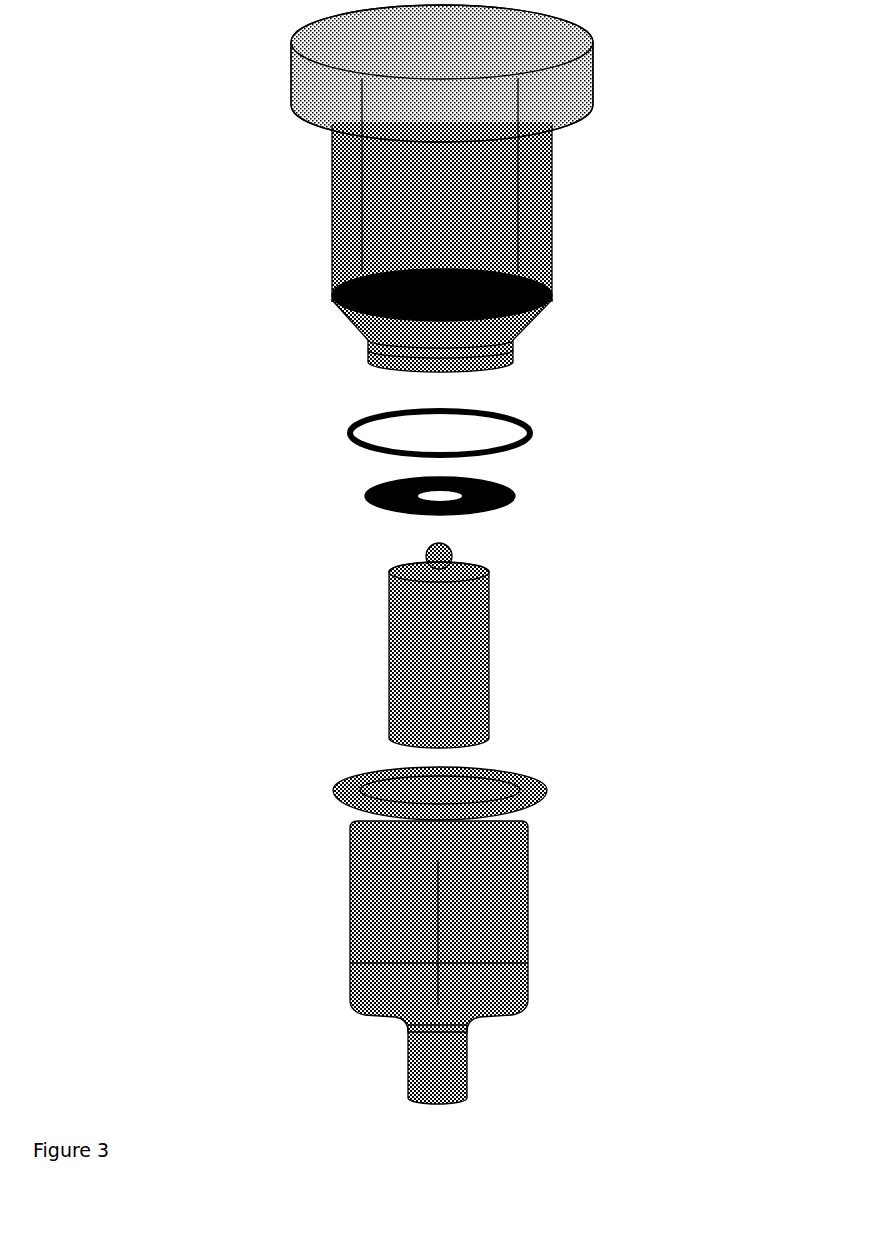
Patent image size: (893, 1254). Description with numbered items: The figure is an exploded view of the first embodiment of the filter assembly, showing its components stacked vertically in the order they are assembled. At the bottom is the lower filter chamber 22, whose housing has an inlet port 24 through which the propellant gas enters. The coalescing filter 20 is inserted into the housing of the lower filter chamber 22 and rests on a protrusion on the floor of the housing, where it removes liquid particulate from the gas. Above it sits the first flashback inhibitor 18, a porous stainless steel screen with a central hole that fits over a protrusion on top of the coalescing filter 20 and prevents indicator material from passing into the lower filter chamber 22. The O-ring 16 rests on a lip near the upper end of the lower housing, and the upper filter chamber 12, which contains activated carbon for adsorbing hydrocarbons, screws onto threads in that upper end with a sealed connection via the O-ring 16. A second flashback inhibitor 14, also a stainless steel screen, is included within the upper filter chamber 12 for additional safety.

The upper filter chamber 12 is at (332, 188).
The flashback inhibitor 14 is at (334, 296).
The o-ring 16 is at (347, 430).
The flashback inhibitor 18 is at (515, 497).
The coalescing filter 20 is at (418, 637).
The lower filter chamber 22 is at (350, 912).
The inlet port 24 is at (420, 1087).